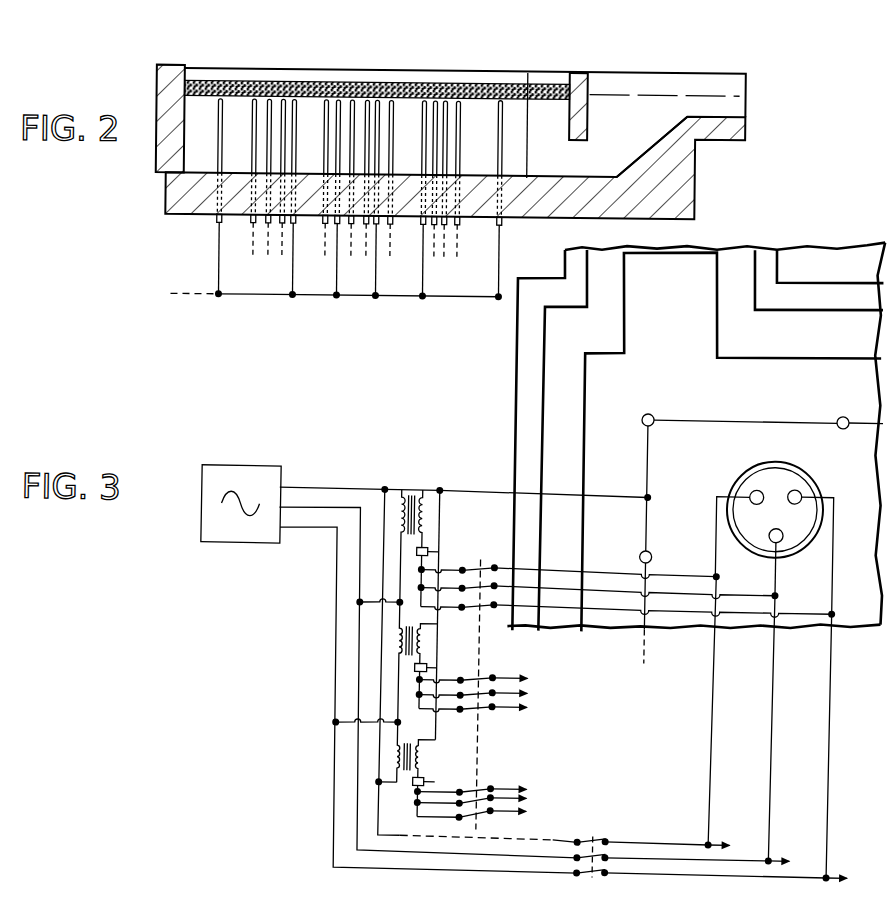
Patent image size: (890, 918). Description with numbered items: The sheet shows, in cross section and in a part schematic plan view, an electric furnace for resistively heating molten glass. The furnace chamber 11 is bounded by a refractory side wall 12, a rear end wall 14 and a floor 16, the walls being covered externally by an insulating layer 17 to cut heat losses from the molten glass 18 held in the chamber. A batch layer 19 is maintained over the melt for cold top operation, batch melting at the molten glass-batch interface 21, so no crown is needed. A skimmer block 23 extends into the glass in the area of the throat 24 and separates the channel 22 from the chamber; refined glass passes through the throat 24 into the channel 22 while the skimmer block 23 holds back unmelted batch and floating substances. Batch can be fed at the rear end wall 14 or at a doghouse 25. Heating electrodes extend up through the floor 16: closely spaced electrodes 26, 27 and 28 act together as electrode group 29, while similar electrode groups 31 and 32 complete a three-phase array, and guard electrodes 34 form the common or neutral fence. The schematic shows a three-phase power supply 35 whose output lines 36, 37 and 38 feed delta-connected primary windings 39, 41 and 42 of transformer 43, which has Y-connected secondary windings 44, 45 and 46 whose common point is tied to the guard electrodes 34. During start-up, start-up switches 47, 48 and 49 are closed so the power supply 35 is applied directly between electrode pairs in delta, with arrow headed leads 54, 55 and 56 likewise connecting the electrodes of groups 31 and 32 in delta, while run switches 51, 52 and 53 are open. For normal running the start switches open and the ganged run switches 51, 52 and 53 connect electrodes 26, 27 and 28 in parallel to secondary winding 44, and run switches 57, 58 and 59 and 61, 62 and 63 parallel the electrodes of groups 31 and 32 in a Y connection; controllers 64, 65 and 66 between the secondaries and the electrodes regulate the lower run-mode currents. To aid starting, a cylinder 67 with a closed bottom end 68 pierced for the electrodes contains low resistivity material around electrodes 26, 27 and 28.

In FIG. 2, the furnace chamber 11 is at (462, 58).
In FIG. 2, the side wall 12 is at (306, 80).
In FIG. 3, the side wall 12 is at (855, 344).
In FIG. 2, the rear end wall 14 is at (180, 67).
In FIG. 3, the rear end wall 14 is at (546, 377).
In FIG. 2, the floor 16 is at (563, 211).
In FIG. 2, the insulating layer 17 is at (157, 97).
In FIG. 3, the insulating layer 17 is at (519, 405).
In FIG. 2, the molten glass 18 is at (472, 141).
In FIG. 2, the batch layer 19 is at (472, 83).
In FIG. 2, the molten glass-batch interface 21 is at (518, 98).
In FIG. 2, the channel 22 is at (659, 58).
In FIG. 2, the skimmer block 23 is at (580, 71).
In FIG. 2, the throat 24 is at (575, 160).
In FIG. 3, the doghouse 25 is at (688, 272).
In FIG. 2, the electrode 26 is at (254, 100).
In FIG. 3, the electrode 26 is at (749, 488).
In FIG. 2, the electrode 27 is at (269, 100).
In FIG. 3, the electrode 27 is at (778, 538).
In FIG. 2, the electrode 28 is at (284, 100).
In FIG. 3, the electrode 28 is at (796, 489).
In FIG. 3, the electrode group 29 is at (781, 518).
In FIG. 3, the electrode group 31 is at (560, 703).
In FIG. 3, the electrode group 32 is at (560, 806).
In FIG. 2, the guard electrodes 34 is at (222, 100).
In FIG. 3, the guard electrodes 34 is at (644, 412).
In FIG. 3, the power supply 35 is at (215, 471).
In FIG. 3, the output line 36 is at (292, 490).
In FIG. 3, the output line 37 is at (310, 509).
In FIG. 3, the output line 38 is at (310, 533).
In FIG. 3, the primary winding 39 is at (399, 515).
In FIG. 3, the primary winding 41 is at (398, 646).
In FIG. 3, the primary winding 42 is at (398, 761).
In FIG. 3, the transformer 43 is at (409, 483).
In FIG. 3, the secondary winding 44 is at (425, 514).
In FIG. 3, the secondary winding 45 is at (424, 640).
In FIG. 3, the secondary winding 46 is at (424, 756).
In FIG. 3, the start-up switch 47 is at (580, 839).
In FIG. 3, the start-up switch 48 is at (610, 843).
In FIG. 3, the start-up switch 49 is at (607, 876).
In FIG. 3, the run switch 51 is at (479, 568).
In FIG. 3, the run switch 52 is at (463, 611).
In FIG. 3, the run switch 53 is at (493, 610).
In FIG. 3, the arrow headed lead 54 is at (724, 841).
In FIG. 3, the arrow headed lead 55 is at (784, 855).
In FIG. 3, the arrow headed lead 56 is at (839, 871).
In FIG. 3, the run switch 57 is at (492, 676).
In FIG. 3, the run switch 58 is at (463, 714).
In FIG. 3, the run switch 59 is at (494, 712).
In FIG. 3, the run switch 61 is at (493, 788).
In FIG. 3, the run switch 62 is at (496, 798).
In FIG. 3, the run switch 63 is at (463, 821).
In FIG. 3, the controller 64 is at (441, 550).
In FIG. 3, the controller 65 is at (440, 666).
In FIG. 3, the controller 66 is at (438, 780).
In FIG. 3, the cylinder 67 is at (794, 459).
In FIG. 3, the closed bottom end 68 is at (766, 470).